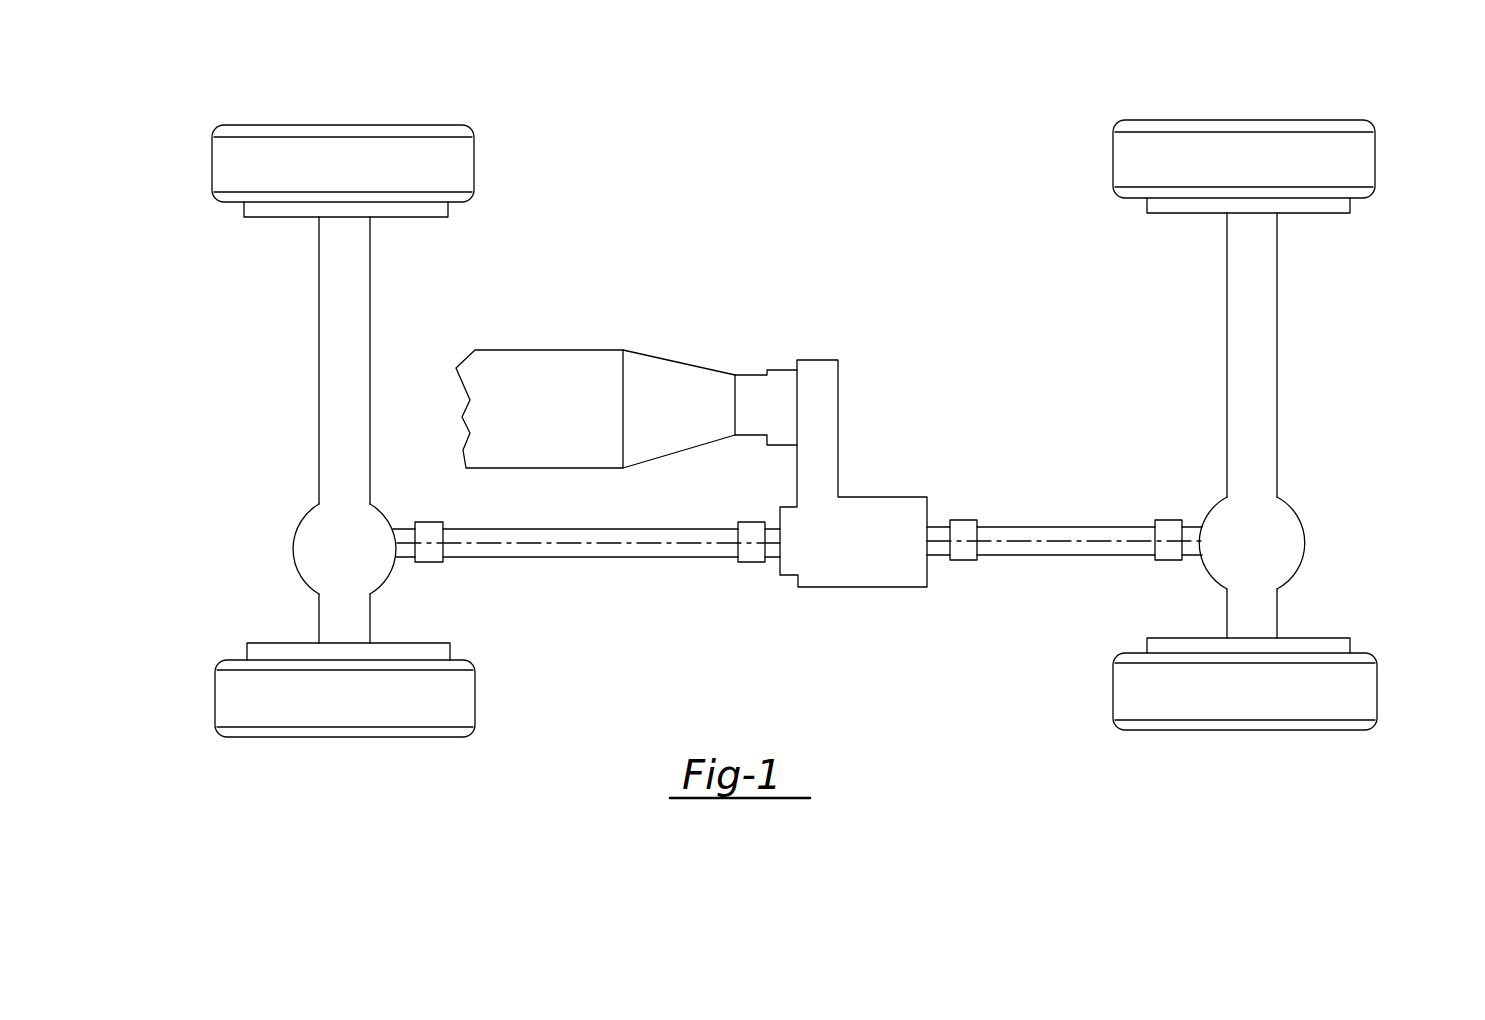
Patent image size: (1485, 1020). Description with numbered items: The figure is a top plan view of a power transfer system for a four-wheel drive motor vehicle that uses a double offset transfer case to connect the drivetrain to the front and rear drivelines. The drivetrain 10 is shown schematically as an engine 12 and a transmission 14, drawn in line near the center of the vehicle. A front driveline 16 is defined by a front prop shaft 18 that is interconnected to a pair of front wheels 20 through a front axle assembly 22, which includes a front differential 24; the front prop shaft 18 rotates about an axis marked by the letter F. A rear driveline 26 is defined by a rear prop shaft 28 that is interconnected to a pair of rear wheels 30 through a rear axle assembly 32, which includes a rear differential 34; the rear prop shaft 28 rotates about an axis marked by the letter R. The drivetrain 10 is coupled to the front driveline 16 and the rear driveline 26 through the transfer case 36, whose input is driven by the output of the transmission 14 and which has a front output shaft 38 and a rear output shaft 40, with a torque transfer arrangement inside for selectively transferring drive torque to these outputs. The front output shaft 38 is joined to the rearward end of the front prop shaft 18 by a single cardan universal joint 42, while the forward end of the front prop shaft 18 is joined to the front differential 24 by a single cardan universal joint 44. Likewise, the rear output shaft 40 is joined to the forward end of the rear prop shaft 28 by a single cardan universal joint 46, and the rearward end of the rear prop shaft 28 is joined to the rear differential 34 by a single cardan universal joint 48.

The drivetrain 10 is at (758, 225).
The engine 12 is at (550, 385).
The transmission 14 is at (670, 380).
The front driveline 16 is at (700, 605).
The front prop shaft 18 is at (507, 530).
The front wheels 20 is at (445, 160).
The front axle assembly 22 is at (315, 429).
The front differential 24 is at (320, 567).
The rear driveline 26 is at (1068, 432).
The rear prop shaft 28 is at (1085, 530).
The rear wheels 30 is at (1350, 155).
The rear axle assembly 32 is at (1281, 346).
The rear differential 34 is at (1263, 540).
The transfer case 36 is at (841, 405).
The front output shaft 38 is at (771, 559).
The rear output shaft 40 is at (936, 557).
The single cardan universal joint 42 is at (752, 530).
The single cardan universal joint 44 is at (428, 559).
The single cardan universal joint 46 is at (963, 523).
The single cardan universal joint 48 is at (1172, 556).